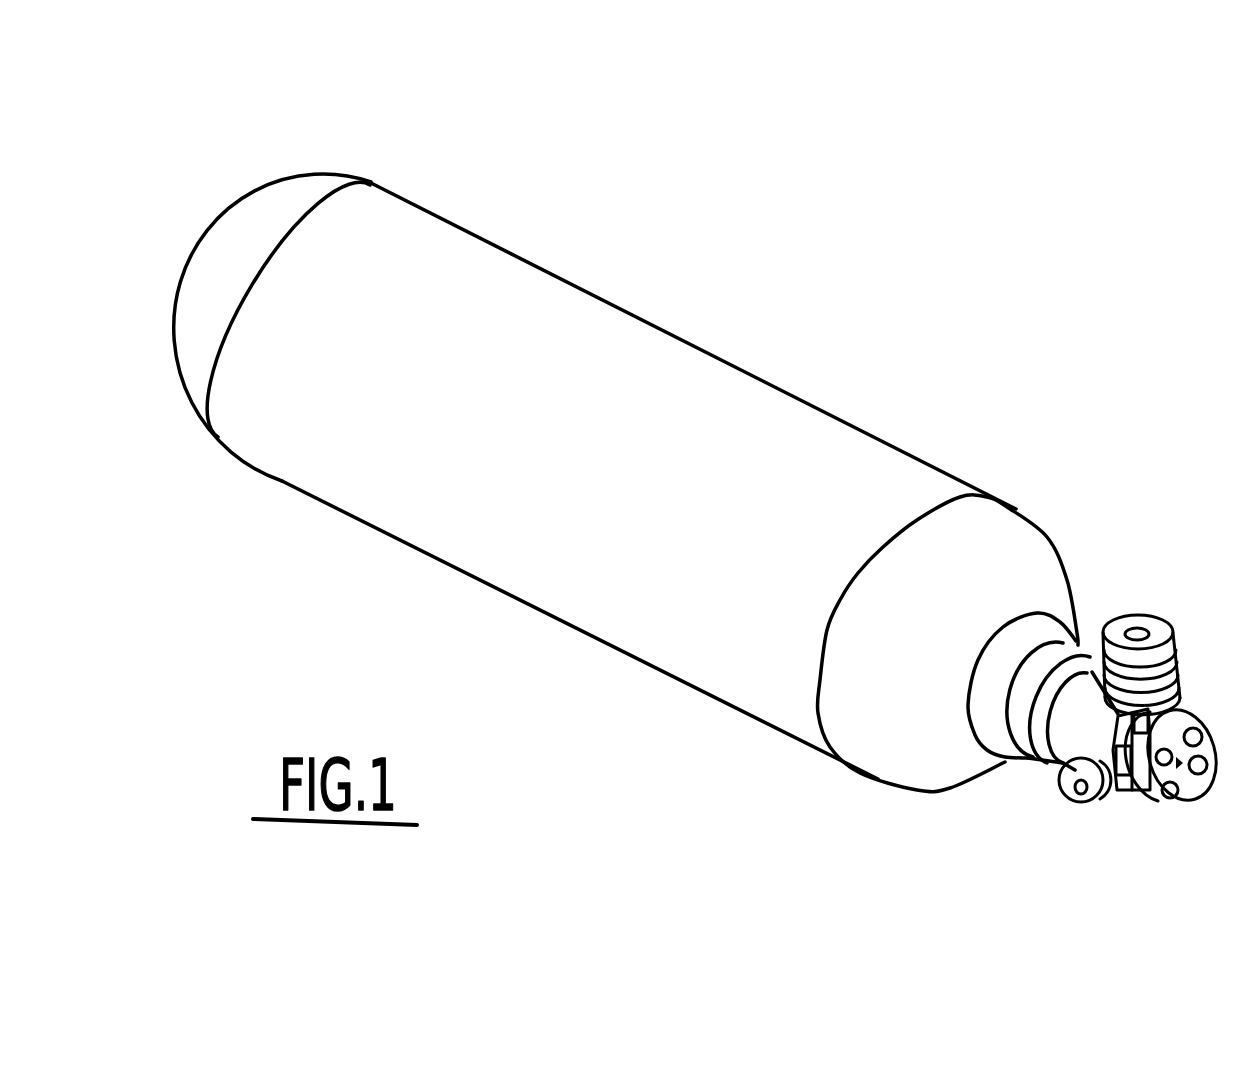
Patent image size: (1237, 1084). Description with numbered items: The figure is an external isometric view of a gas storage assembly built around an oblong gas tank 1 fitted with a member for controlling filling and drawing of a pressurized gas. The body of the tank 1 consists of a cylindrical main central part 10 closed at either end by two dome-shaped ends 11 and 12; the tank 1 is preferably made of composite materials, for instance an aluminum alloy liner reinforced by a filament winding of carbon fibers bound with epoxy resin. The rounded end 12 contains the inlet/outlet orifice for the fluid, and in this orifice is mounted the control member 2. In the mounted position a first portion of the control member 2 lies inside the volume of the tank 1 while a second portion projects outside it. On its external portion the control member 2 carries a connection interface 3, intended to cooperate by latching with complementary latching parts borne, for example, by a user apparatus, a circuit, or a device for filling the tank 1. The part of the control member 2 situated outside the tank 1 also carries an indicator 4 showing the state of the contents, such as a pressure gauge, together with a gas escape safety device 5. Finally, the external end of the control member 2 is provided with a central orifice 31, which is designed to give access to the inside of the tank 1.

The gas tank 1 is at (640, 283).
The cylindrical main central part 10 is at (693, 440).
The dome-shaped end 11 is at (238, 257).
The rounded end 12 is at (980, 563).
The control member 2 is at (1090, 723).
The connection interface 3 is at (1125, 782).
The central orifice 31 is at (1194, 805).
The indicator 4 is at (1078, 790).
The gas escape safety device 5 is at (1138, 636).